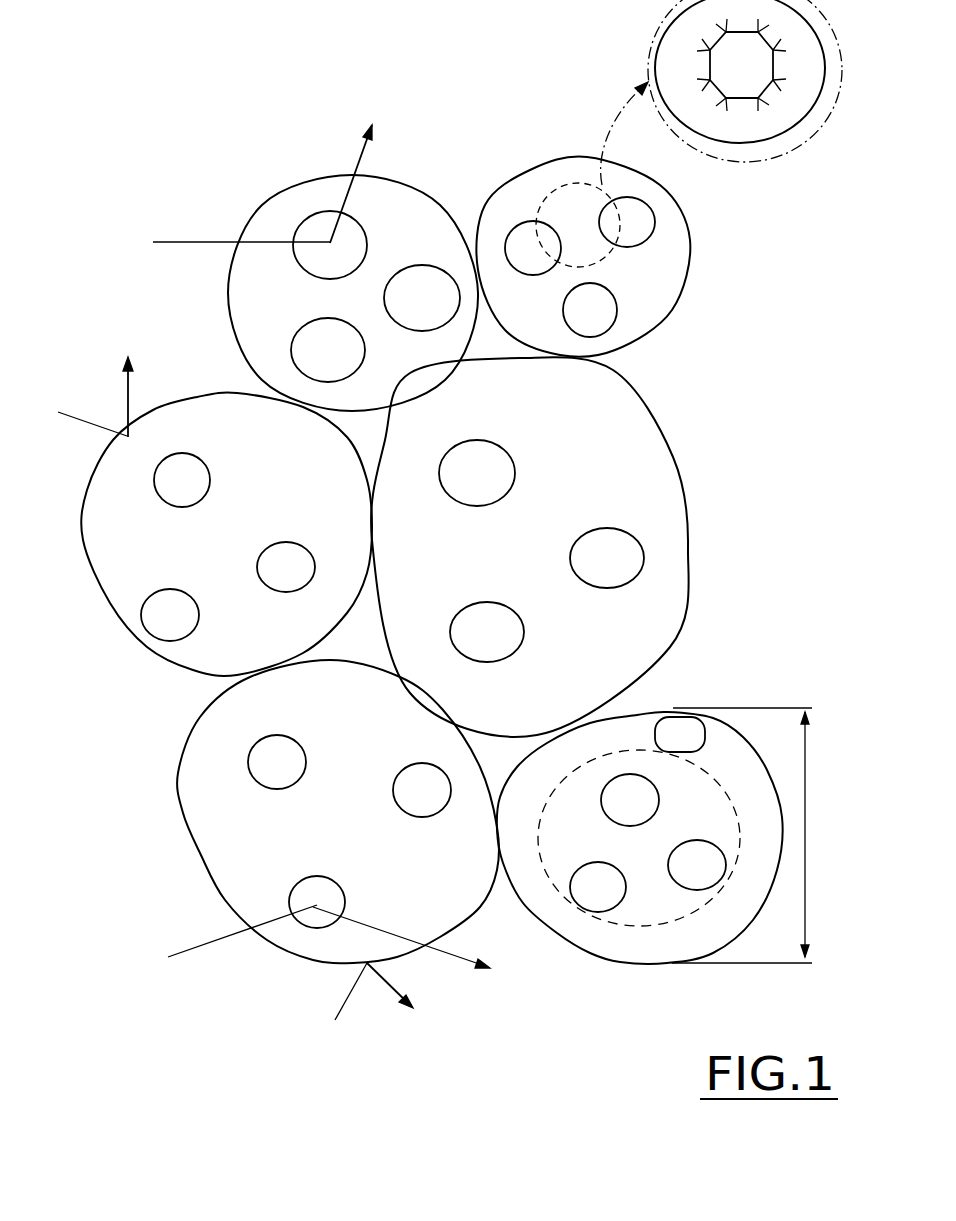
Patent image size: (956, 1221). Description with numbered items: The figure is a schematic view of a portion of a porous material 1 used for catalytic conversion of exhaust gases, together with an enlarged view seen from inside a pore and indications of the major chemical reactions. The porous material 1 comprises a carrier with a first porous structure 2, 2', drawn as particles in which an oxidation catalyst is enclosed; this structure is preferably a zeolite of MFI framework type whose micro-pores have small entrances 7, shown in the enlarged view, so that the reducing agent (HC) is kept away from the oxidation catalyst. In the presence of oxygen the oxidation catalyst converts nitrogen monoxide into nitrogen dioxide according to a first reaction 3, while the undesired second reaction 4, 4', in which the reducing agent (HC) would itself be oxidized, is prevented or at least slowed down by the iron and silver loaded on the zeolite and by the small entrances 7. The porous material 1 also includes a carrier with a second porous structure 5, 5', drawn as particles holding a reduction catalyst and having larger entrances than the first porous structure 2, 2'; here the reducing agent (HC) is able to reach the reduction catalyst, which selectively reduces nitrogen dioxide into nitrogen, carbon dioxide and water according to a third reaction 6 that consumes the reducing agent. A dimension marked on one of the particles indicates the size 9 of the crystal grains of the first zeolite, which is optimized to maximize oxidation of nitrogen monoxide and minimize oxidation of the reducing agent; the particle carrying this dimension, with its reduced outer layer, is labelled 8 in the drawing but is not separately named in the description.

The porous material 1 is at (203, 72).
The first porous structure 2 is at (323, 829).
The first porous structure 2' is at (583, 221).
The first reaction 3 is at (313, 905).
The second reaction 4 is at (204, 516).
The second reaction 4' is at (353, 1017).
The second porous structure 5 is at (288, 218).
The second porous structure 5' is at (580, 547).
The third reaction 6 is at (330, 243).
The entrances 7 is at (725, 53).
The coated oxidation catalyst particle 8 is at (610, 953).
The size 9 is at (837, 868).